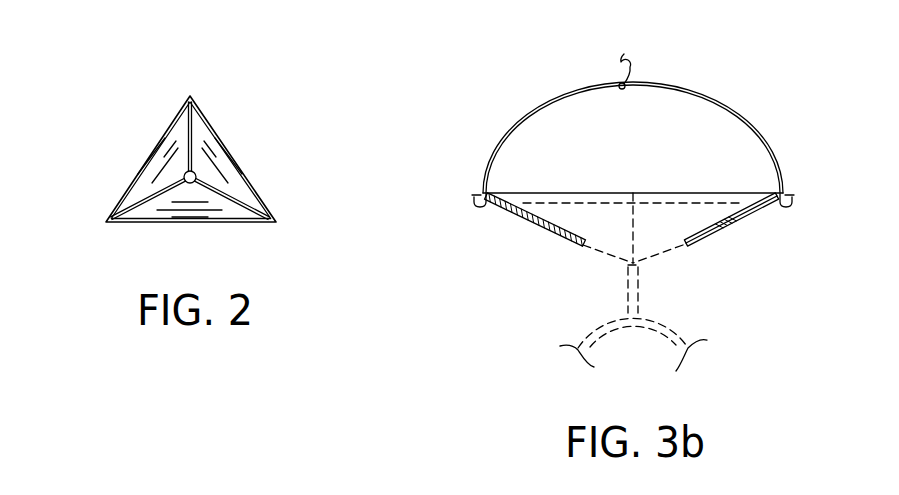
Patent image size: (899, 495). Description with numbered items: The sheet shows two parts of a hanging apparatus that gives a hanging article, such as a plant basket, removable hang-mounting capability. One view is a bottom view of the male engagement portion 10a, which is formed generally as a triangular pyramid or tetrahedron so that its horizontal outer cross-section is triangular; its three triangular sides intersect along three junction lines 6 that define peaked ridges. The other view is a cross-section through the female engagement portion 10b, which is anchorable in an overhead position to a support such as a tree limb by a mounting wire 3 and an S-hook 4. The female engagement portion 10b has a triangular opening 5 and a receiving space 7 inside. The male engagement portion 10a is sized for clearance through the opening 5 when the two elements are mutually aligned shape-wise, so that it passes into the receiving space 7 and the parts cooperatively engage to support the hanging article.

In FIG. 3B, the mounting wire 3 is at (723, 100).
In FIG. 3B, the S-hook 4 is at (630, 73).
In FIG. 3B, the triangular opening 5 is at (684, 246).
In FIG. 2, the junction lines 6 is at (190, 118).
In FIG. 3B, the receiving space 7 is at (543, 210).
In FIG. 2, the male engagement portion 10a is at (226, 149).
In FIG. 3B, the female engagement portion 10b is at (727, 224).